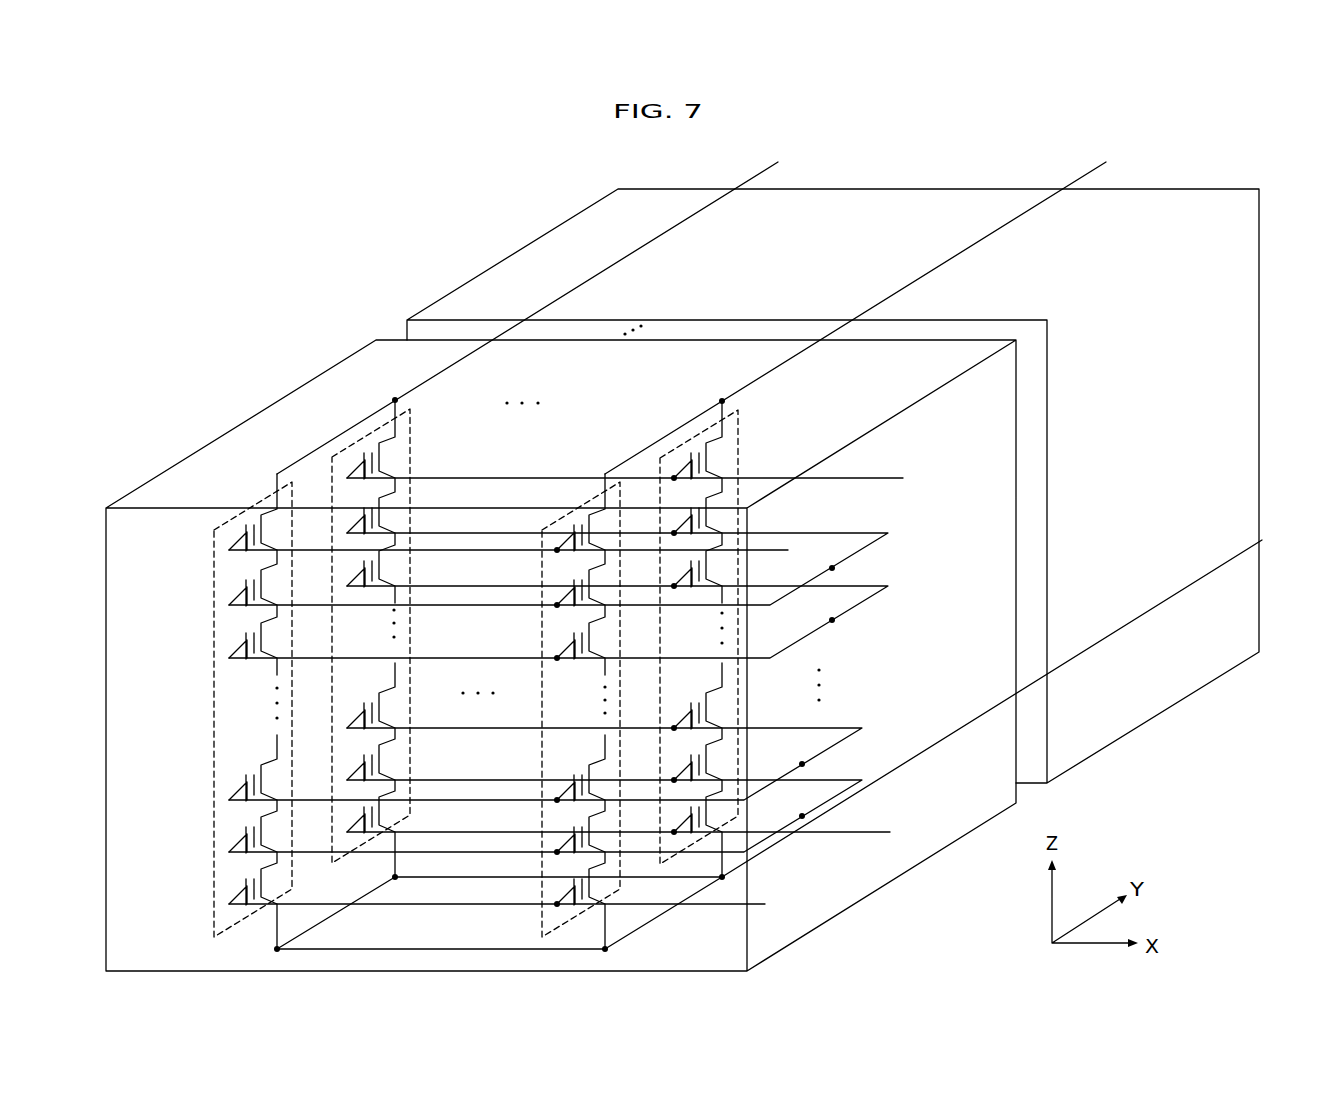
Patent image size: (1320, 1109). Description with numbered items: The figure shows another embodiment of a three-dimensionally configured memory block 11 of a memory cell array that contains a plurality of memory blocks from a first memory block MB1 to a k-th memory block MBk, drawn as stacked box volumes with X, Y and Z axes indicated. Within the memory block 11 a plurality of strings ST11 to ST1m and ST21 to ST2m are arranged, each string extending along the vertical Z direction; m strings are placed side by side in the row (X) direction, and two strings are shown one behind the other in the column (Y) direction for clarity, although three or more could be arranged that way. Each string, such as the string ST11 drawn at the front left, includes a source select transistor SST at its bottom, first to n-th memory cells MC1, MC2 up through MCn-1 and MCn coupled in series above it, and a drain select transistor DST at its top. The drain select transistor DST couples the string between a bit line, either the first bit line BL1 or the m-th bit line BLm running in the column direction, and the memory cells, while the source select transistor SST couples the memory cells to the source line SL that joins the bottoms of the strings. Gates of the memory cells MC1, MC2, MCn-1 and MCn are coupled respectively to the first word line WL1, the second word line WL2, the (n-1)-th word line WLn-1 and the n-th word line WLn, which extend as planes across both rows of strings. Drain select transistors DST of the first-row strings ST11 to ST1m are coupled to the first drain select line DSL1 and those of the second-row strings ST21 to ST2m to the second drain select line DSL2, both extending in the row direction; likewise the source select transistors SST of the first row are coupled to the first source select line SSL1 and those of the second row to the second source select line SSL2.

The memory block 11 is at (1208, 152).
The k-th memory block MBk is at (535, 240).
The first memory block MB1 is at (262, 410).
The first bit line BL1 is at (534, 308).
The m-th bit line BLm is at (864, 307).
The string ST11' ST11 is at (255, 505).
The string ST21' ST21 is at (375, 430).
The string ST1m' ST1m is at (582, 505).
The string ST2m' ST2m is at (700, 433).
The drain select transistor DST is at (229, 527).
The n-th memory cell MCn is at (229, 582).
The (n-1)-th memory cell MCn-1 is at (229, 633).
The second memory cell MC2 is at (230, 777).
The first memory cell MC1 is at (230, 830).
The source select transistor SST is at (230, 880).
The first drain select line DSL1 is at (531, 552).
The second drain select line DSL2 is at (647, 482).
The n-th word line WLn is at (832, 568).
The (n-1)-th word line WLn-1 is at (832, 620).
The second word line WL2 is at (802, 764).
The first word line WL1 is at (802, 816).
The first source select line SSL1 is at (517, 907).
The second source select line SSL2 is at (641, 834).
The source line SL is at (787, 736).